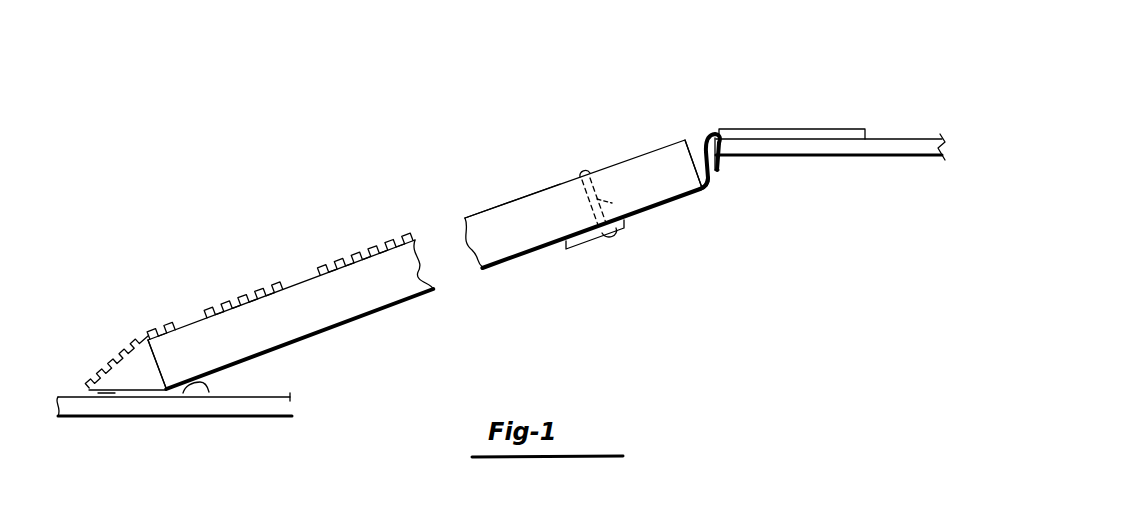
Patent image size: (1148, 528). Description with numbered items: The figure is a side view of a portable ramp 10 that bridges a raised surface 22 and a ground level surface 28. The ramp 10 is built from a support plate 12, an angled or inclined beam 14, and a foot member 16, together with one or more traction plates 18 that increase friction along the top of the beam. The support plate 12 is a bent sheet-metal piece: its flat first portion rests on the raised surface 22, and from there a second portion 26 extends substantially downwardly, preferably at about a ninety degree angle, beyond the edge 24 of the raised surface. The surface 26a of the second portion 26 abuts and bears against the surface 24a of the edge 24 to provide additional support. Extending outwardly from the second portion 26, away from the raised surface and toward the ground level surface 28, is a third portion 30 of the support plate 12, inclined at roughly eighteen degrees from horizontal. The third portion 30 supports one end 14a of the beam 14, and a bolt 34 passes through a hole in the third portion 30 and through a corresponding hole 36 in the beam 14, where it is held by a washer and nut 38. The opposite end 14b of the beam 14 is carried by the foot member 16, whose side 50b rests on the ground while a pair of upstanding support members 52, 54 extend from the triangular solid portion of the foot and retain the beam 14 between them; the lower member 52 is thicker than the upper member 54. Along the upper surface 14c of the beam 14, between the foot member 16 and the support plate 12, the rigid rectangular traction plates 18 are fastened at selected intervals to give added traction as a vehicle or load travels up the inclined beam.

The portable ramp 10 is at (253, 228).
The support plate 12 is at (783, 130).
The angled beam 14 is at (508, 262).
The end of angled beam 14a is at (673, 167).
The end of beam 14b is at (170, 357).
The upper surface of angled beam 14c is at (483, 211).
The foot member 16 is at (121, 358).
The traction plate 18 is at (278, 281).
The raised surface 22 is at (890, 143).
The edge of raised surface 24 is at (711, 146).
The surface of edge 24a is at (718, 172).
The second portion of support plate 26 is at (705, 157).
The surface of second portion 26a is at (717, 181).
The ground level surface 28 is at (135, 416).
The third portion of support plate 30 is at (585, 249).
The bolt 34 is at (587, 173).
The hole in beam 36 is at (628, 221).
The washer and nut 38 is at (612, 240).
The side of foot member 50b is at (145, 390).
The lower support member 52 is at (206, 382).
The upper support member 54 is at (176, 320).